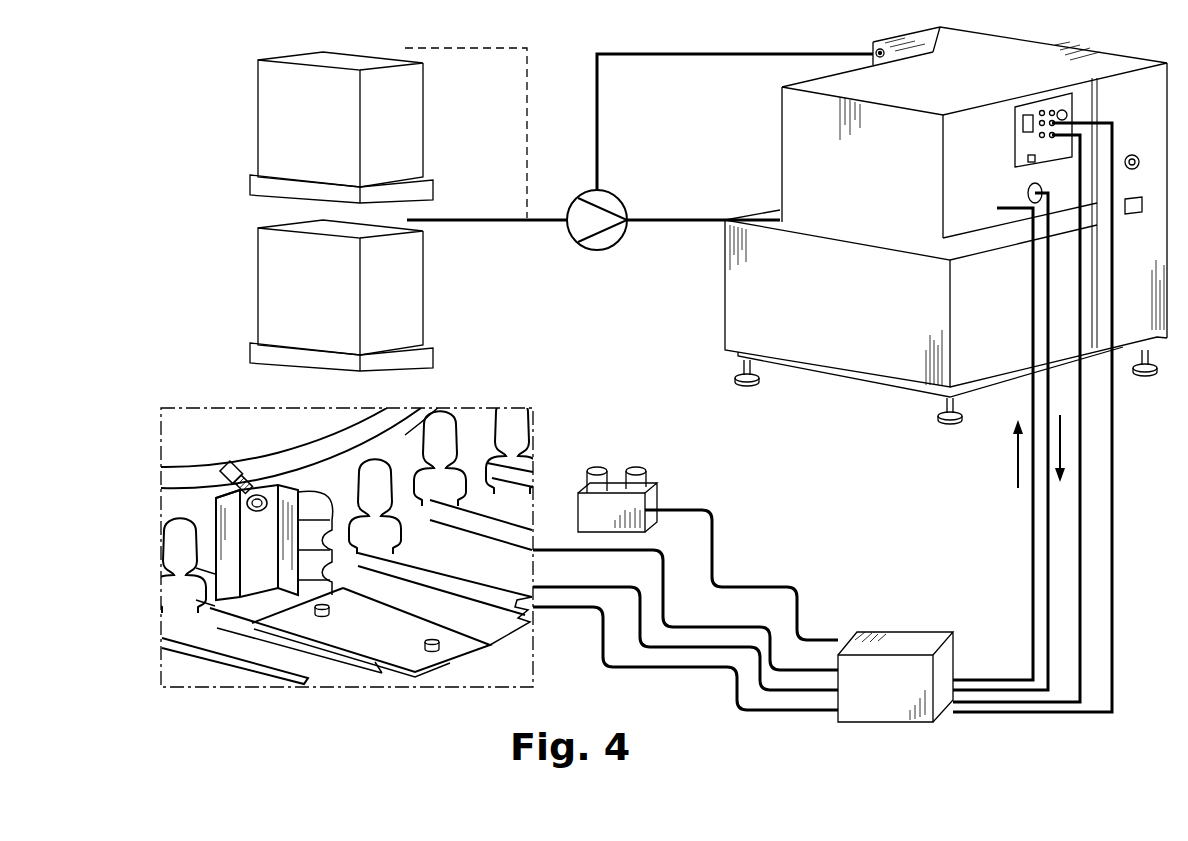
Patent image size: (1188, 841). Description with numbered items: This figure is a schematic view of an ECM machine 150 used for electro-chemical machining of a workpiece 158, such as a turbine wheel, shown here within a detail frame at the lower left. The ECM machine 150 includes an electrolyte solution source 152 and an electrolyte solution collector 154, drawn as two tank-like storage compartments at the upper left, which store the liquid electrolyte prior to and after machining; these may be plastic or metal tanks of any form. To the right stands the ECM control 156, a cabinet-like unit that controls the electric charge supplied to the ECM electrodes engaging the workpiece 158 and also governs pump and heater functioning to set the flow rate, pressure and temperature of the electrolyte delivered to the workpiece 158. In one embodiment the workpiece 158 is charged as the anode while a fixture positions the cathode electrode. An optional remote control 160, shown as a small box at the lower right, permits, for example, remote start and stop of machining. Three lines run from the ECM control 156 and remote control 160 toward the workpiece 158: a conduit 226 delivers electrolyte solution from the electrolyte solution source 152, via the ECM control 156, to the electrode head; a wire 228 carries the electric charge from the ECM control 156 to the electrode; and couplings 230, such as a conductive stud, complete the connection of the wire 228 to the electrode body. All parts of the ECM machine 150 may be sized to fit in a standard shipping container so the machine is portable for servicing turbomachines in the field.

The ECM machine 150 is at (559, 50).
The electrolyte solution source 152 is at (323, 136).
The electrolyte solution collector 154 is at (323, 304).
The ECM control 156 is at (973, 43).
The workpiece 158 is at (447, 404).
The remote control 160 is at (627, 505).
The conduit 226 is at (688, 630).
The wire 228 is at (797, 693).
The couplings 230 is at (710, 677).